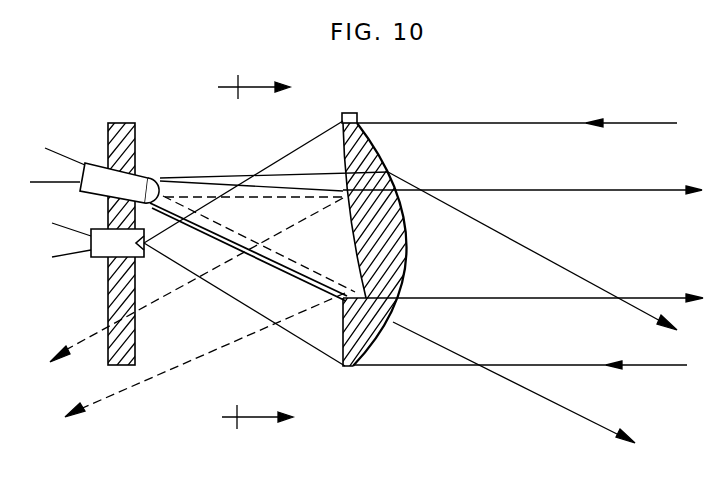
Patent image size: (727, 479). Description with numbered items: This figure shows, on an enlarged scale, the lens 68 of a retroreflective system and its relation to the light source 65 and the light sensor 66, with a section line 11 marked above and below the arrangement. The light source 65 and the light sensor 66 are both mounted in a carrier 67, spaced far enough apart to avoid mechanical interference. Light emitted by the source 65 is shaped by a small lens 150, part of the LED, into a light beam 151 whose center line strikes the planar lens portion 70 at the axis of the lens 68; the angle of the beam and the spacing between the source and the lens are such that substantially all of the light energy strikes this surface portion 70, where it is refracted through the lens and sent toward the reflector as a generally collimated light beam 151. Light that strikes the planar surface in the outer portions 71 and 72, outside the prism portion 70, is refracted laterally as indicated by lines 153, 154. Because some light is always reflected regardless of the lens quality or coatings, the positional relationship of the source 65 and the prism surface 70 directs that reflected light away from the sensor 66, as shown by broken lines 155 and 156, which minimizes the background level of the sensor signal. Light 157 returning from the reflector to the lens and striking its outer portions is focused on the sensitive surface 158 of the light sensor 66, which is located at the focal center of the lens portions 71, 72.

The section line 11- 11 is at (255, 253).
The light source 65 is at (100, 178).
The light sensor 66 is at (100, 250).
The carrier 67 is at (127, 128).
The lens 68 is at (336, 233).
The planar lens portion 70 is at (353, 238).
The lens portion 71 is at (343, 156).
The lens portion 72 is at (343, 331).
The lens 150 is at (162, 178).
The light beam 151 is at (660, 192).
The line 153 is at (523, 247).
The line 154 is at (545, 400).
The broken line 155 is at (158, 302).
The broken line 156 is at (190, 362).
The light 157 is at (497, 123).
The sensitive surface 158 is at (244, 243).